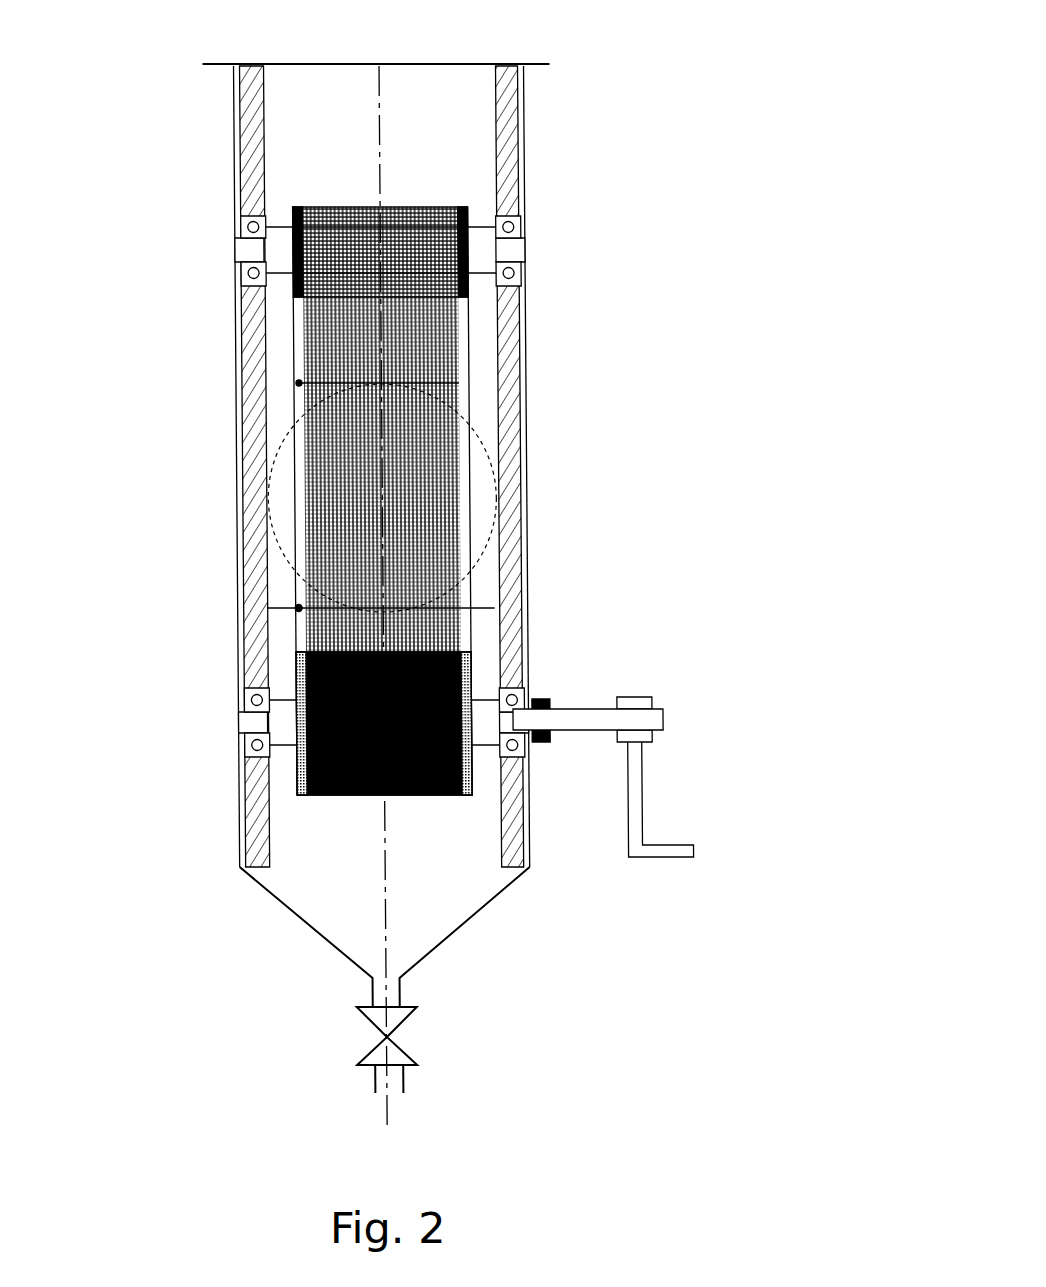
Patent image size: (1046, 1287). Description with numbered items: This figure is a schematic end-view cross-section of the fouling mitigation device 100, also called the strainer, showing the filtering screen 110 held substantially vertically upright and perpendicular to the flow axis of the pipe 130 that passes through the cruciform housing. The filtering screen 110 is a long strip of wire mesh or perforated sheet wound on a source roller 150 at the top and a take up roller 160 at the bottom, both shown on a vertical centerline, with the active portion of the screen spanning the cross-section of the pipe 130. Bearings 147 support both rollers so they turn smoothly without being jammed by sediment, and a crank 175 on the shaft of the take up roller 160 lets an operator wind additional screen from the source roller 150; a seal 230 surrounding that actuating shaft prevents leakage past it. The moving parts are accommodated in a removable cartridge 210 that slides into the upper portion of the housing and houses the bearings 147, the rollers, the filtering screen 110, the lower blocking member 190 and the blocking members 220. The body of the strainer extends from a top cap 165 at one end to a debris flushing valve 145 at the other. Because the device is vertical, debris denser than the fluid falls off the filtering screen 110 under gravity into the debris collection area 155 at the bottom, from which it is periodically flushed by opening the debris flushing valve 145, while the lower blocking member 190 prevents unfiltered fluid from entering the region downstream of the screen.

The fouling mitigation device 100 is at (748, 216).
The filtering screen 110 is at (437, 375).
The pipe 130 is at (280, 438).
The debris flushing valve 145 is at (397, 1028).
The bearings 147 is at (508, 750).
The source roller 150 is at (278, 226).
The debris collection area 155 is at (371, 923).
The take up roller 160 is at (279, 740).
The top cap 165 is at (406, 63).
The crank 175 is at (636, 812).
The lower blocking member 190 is at (294, 608).
The removable cartridge 210 is at (504, 135).
The blocking members 220 is at (478, 483).
The seal 230 is at (547, 697).